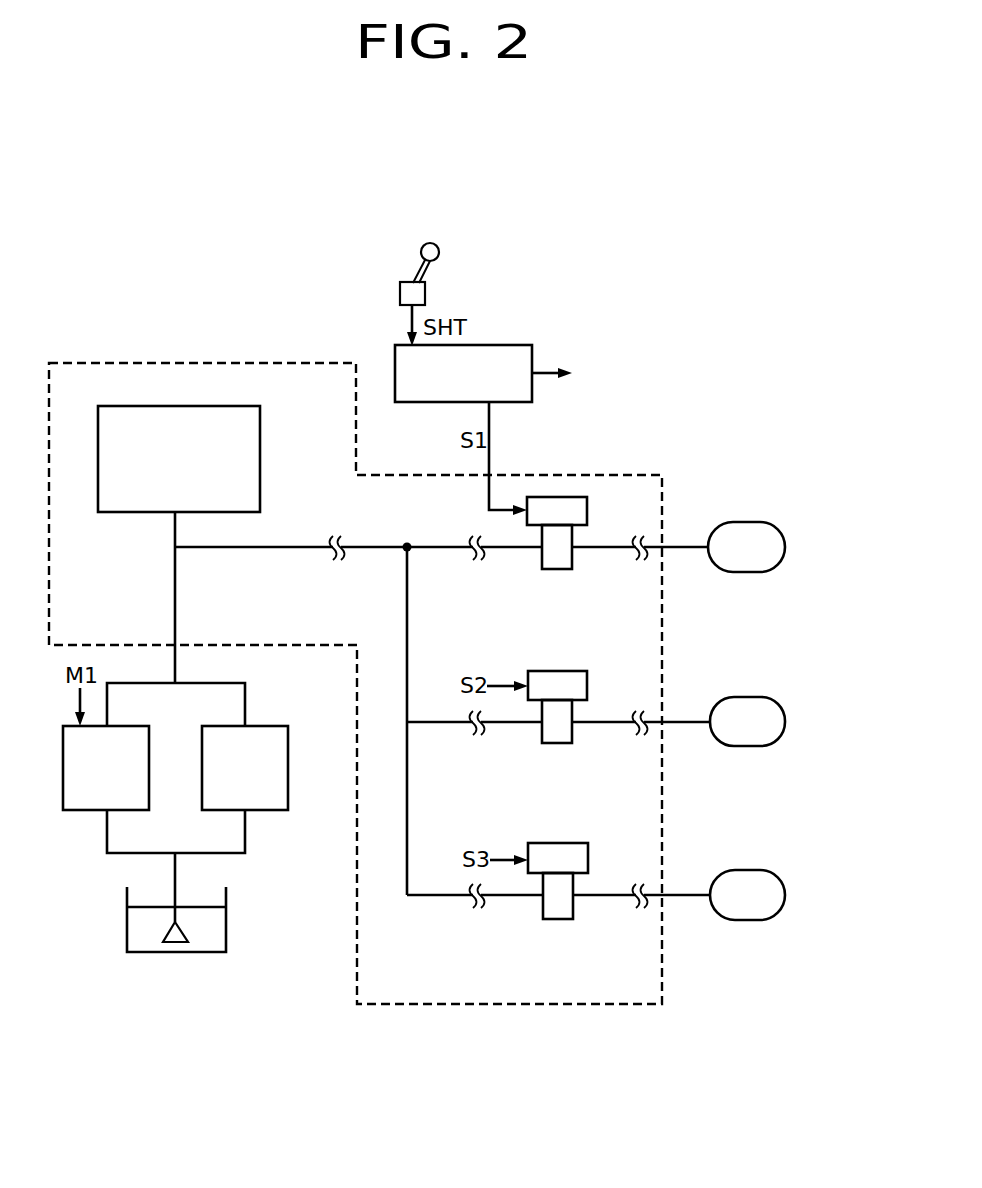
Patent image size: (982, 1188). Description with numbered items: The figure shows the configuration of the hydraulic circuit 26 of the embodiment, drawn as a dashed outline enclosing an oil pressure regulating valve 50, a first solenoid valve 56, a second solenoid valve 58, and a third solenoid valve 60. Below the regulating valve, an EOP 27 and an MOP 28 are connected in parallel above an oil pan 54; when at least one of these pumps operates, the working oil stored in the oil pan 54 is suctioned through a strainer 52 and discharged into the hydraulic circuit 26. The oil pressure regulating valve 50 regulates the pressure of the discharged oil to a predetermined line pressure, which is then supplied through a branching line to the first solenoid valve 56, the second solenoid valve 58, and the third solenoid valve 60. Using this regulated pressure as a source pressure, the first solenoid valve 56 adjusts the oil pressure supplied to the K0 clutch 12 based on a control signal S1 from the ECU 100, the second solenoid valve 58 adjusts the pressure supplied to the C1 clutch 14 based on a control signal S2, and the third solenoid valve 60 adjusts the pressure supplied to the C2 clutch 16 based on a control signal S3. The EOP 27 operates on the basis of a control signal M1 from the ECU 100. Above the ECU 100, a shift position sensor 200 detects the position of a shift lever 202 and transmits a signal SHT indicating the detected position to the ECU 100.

The K0 clutch 12 is at (745, 522).
The C1 clutch 14 is at (745, 697).
The C2 clutch 16 is at (745, 870).
The hydraulic circuit 26 is at (571, 474).
The EOP 27 is at (127, 726).
The MOP 28 is at (267, 726).
The oil pressure regulating valve 50 is at (201, 406).
The strainer 52 is at (183, 943).
The oil pan 54 is at (226, 930).
The first solenoid valve 56 is at (588, 512).
The second solenoid valve 58 is at (588, 688).
The third solenoid valve 60 is at (588, 860).
The ECU 100 is at (498, 345).
The shift position sensor 200 is at (426, 294).
The shift lever 202 is at (439, 249).